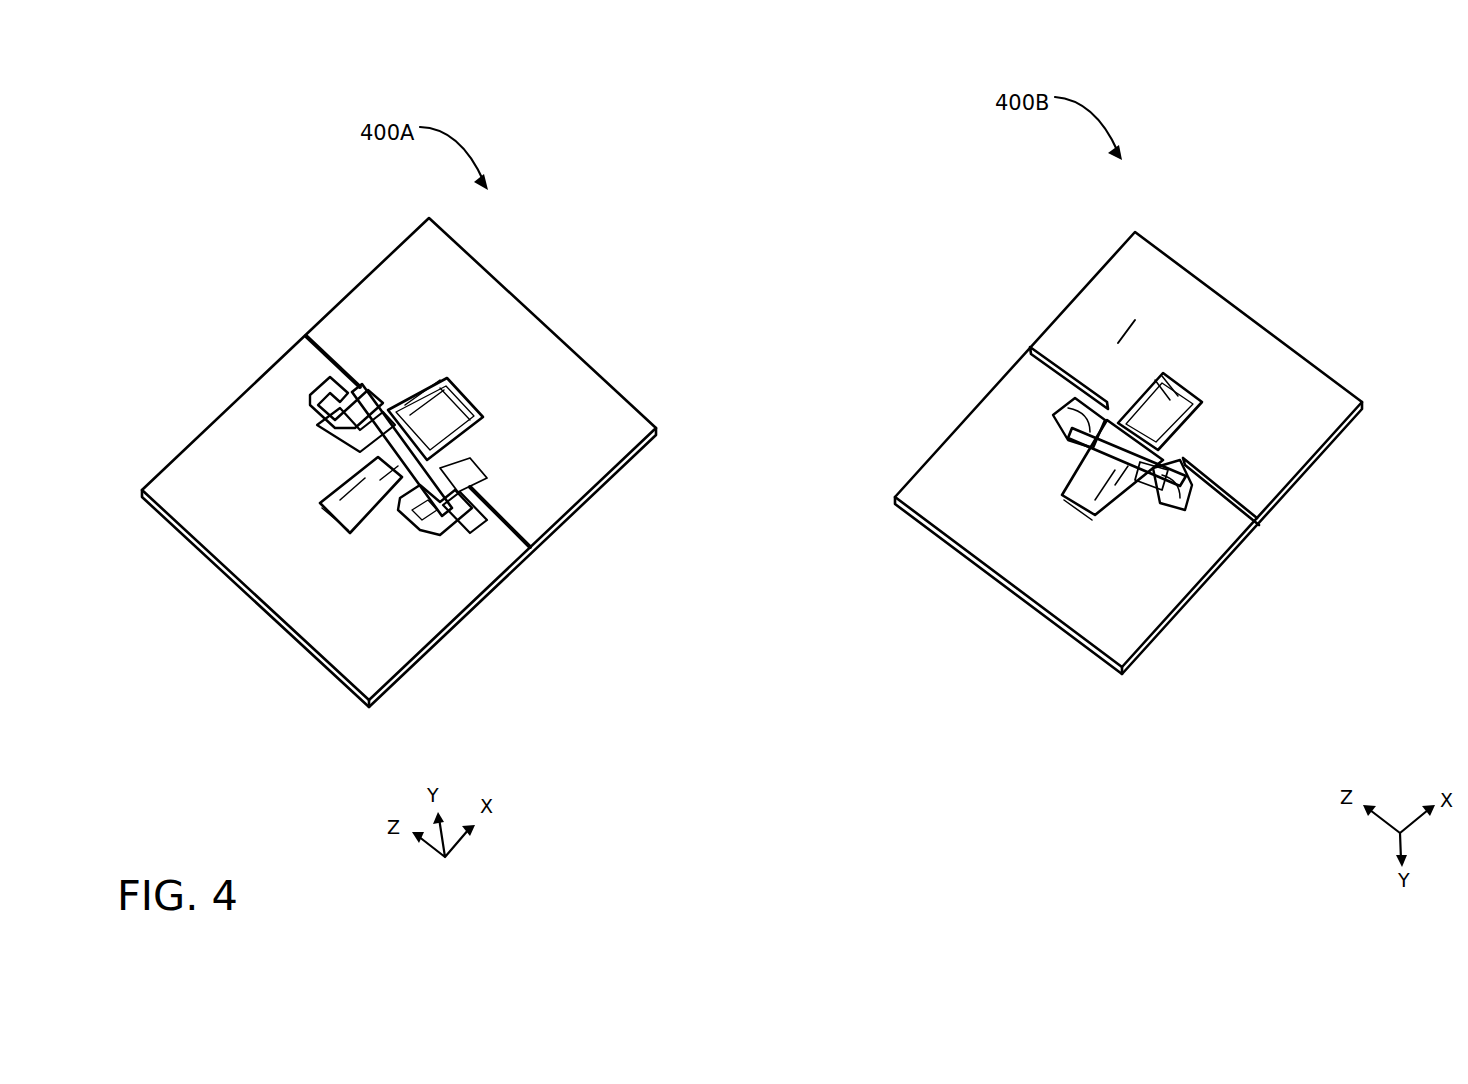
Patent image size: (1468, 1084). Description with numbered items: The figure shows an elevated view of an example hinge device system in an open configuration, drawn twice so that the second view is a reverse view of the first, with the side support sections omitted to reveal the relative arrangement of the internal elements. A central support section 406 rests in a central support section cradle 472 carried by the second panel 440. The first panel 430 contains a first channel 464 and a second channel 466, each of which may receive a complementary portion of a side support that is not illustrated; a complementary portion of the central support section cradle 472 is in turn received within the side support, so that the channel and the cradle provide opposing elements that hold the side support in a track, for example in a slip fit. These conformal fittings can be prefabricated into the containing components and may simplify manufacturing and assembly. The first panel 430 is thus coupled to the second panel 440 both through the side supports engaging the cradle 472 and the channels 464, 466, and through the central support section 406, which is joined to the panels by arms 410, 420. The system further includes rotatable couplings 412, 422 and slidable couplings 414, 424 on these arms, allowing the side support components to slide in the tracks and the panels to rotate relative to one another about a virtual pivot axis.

The central support section 406 is at (463, 485).
The arm 410 is at (353, 492).
The rotatable coupling 412 is at (387, 477).
The slidable coupling 414 is at (353, 487).
The arm 420 is at (440, 432).
The rotatable coupling 422 is at (417, 460).
The slidable coupling 424 is at (410, 423).
The first panel 430 is at (277, 513).
The second panel 440 is at (540, 368).
The first channel 464 is at (312, 400).
The second channel 466 is at (471, 537).
The central support section cradle 472 is at (357, 387).